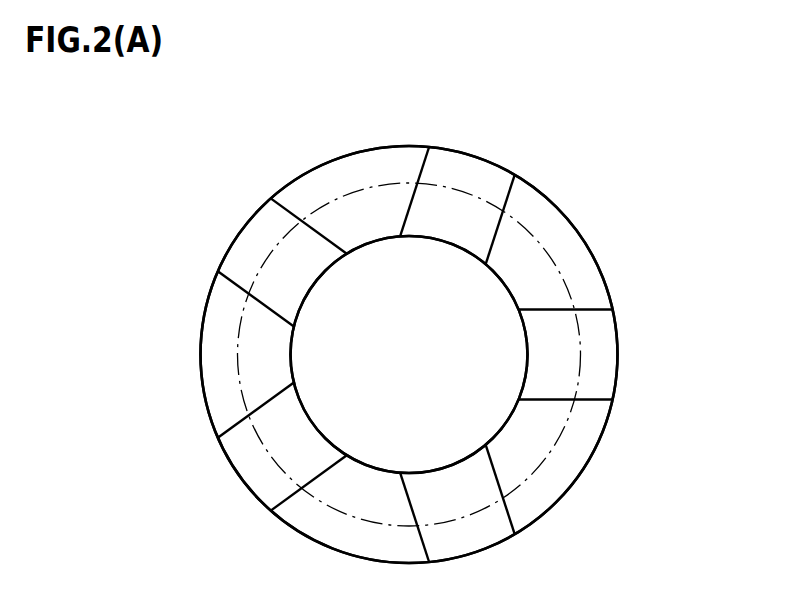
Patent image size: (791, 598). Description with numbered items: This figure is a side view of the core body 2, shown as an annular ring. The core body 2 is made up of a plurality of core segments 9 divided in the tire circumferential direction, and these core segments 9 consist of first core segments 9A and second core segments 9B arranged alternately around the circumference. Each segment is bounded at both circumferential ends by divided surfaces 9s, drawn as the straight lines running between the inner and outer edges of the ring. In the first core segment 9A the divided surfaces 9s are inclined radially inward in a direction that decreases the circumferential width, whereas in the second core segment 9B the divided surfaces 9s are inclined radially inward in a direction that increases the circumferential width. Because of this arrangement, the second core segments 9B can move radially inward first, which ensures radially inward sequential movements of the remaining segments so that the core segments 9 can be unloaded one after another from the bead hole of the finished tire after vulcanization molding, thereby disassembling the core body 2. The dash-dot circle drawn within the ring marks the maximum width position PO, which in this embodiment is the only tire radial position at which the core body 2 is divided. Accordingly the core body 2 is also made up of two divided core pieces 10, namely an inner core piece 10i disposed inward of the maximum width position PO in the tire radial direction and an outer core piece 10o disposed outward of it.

The core body 2 is at (597, 192).
The core segments 9 is at (474, 308).
The first core segment 9A is at (598, 262).
The second core segment 9B is at (478, 157).
The divided surfaces 9s is at (403, 232).
The maximum width position PO is at (580, 341).
The divided core pieces 10 is at (454, 368).
The outer divided core piece 10o is at (578, 428).
The inner divided core piece 10i is at (517, 457).